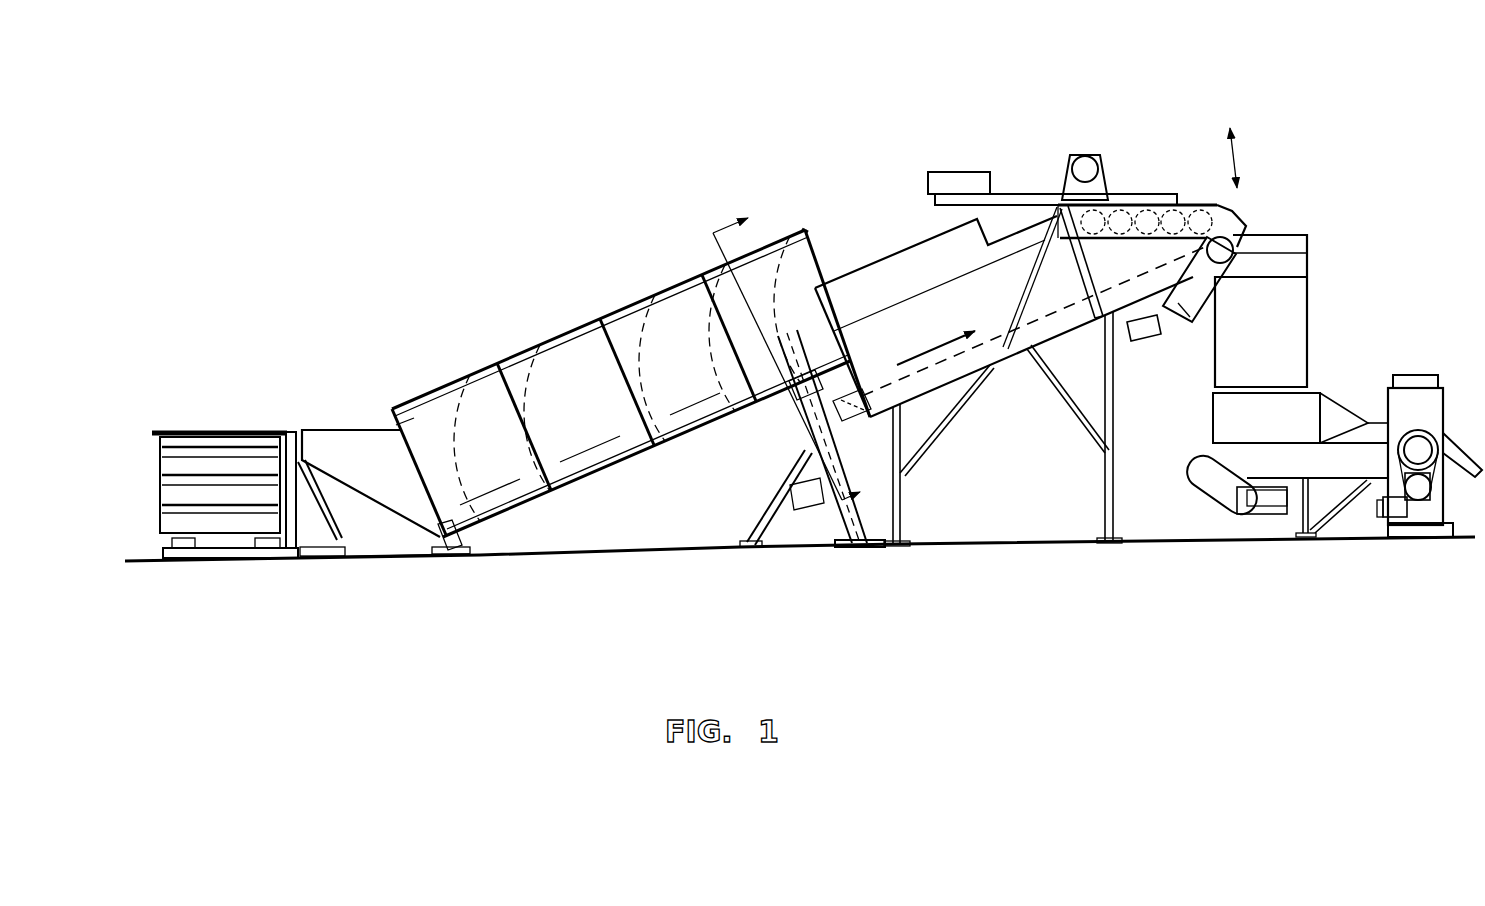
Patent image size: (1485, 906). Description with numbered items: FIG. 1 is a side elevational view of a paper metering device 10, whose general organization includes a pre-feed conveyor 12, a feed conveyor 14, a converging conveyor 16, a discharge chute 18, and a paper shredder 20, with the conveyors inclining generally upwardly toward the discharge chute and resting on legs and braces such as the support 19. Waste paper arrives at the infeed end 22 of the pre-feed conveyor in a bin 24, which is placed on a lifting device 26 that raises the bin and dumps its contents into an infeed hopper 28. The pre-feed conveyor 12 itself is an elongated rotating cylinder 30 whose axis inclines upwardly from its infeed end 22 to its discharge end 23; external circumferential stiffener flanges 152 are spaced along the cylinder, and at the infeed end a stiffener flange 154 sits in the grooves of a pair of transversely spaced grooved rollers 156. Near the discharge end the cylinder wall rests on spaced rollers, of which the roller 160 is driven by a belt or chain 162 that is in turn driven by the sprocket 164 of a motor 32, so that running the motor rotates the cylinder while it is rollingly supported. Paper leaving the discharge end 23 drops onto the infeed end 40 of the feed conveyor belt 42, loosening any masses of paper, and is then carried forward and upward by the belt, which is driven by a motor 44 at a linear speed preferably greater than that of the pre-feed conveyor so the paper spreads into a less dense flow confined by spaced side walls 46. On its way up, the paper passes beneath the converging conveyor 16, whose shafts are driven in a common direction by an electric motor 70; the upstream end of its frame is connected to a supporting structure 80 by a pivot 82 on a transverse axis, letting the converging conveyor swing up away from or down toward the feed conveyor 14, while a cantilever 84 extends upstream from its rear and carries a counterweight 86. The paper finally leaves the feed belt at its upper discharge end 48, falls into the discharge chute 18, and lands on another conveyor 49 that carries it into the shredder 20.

The paper metering device 10 is at (628, 198).
The pre-feed conveyor 12 is at (547, 338).
The feed conveyor 14 is at (882, 255).
The converging conveyor 16 is at (1143, 195).
The discharge chute 18 is at (1310, 303).
The support 19 is at (905, 476).
The paper shredder 20 is at (1408, 368).
The infeed end 22 is at (388, 412).
The discharge end 23 is at (810, 249).
The bin 24 is at (157, 432).
The lifting device 26 is at (306, 526).
The infeed hopper 28 is at (330, 437).
The cylinder 30 is at (408, 400).
The motor 32 is at (804, 510).
The infeed end 40 is at (938, 420).
The feed conveyor belt 42 is at (990, 365).
The motor 44 is at (1176, 327).
The side walls 46 is at (960, 281).
The discharge end 48 is at (1237, 238).
The conveyor 49 is at (1217, 458).
The electric motor 70 is at (1083, 156).
The supporting structure 80 is at (1055, 230).
The pivot 82 is at (1054, 207).
The cantilever 84 is at (1012, 194).
The counterweight 86 is at (961, 172).
The stiffener flanges 152 is at (497, 360).
The stiffener flange 154 is at (389, 400).
The grooved rollers 156 is at (453, 535).
The roller 160 is at (790, 421).
The belt or chain 162 is at (810, 452).
The sprocket 164 is at (860, 543).